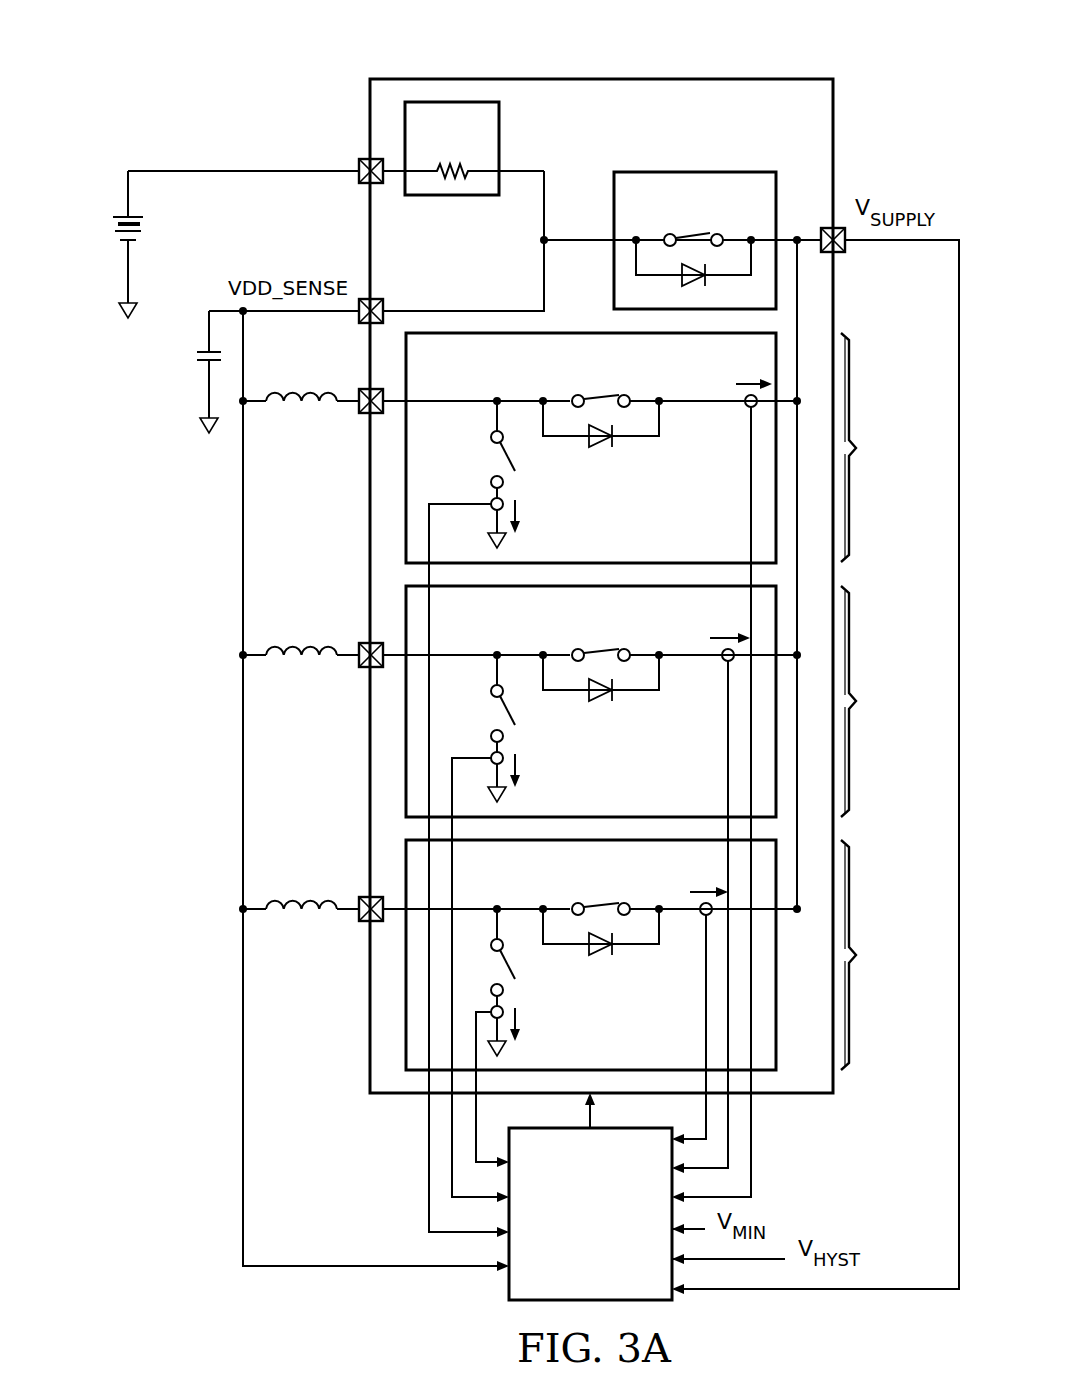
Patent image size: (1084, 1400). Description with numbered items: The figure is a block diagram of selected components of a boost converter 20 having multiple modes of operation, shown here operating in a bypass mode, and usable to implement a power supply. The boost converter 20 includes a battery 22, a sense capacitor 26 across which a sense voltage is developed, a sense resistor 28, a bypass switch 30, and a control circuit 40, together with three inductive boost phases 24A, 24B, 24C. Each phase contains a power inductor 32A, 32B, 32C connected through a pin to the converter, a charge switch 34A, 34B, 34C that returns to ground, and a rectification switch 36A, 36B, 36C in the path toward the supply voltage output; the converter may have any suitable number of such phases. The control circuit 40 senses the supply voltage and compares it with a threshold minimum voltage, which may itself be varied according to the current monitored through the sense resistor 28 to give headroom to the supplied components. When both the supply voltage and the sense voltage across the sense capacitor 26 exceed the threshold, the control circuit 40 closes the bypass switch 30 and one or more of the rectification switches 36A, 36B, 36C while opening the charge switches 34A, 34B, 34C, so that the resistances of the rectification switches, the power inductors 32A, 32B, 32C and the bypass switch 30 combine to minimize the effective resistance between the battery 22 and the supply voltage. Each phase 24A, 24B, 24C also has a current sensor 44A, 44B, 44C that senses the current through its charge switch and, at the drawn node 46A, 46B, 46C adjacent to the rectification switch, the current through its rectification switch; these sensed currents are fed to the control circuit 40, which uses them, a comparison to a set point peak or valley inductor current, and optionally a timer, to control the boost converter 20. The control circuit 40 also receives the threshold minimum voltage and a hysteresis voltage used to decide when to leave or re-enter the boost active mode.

The boost converter 20 is at (240, 62).
The battery 22 is at (143, 225).
The inductive boost phase 24A is at (659, 448).
The inductive boost phase 24B is at (659, 701).
The inductive boost phase 24C is at (659, 955).
The sense capacitor 26 is at (195, 355).
The sense resistor 28 is at (448, 165).
The bypass switch 30 is at (697, 237).
The power inductor 32A is at (311, 383).
The power inductor 32B is at (311, 637).
The power inductor 32C is at (311, 891).
The charge switch 34A is at (512, 460).
The charge switch 34B is at (512, 714).
The charge switch 34C is at (512, 968).
The rectification switch 36A is at (601, 396).
The rectification switch 36B is at (601, 650).
The rectification switch 36C is at (601, 904).
The control circuit 40 is at (606, 1258).
The current sensor 44A is at (500, 500).
The current sensor 44B is at (500, 754).
The current sensor 44C is at (500, 1008).
The current sensor A output 46A is at (749, 409).
The current sensor B output 46B is at (725, 663).
The current sensor C output 46C is at (702, 916).